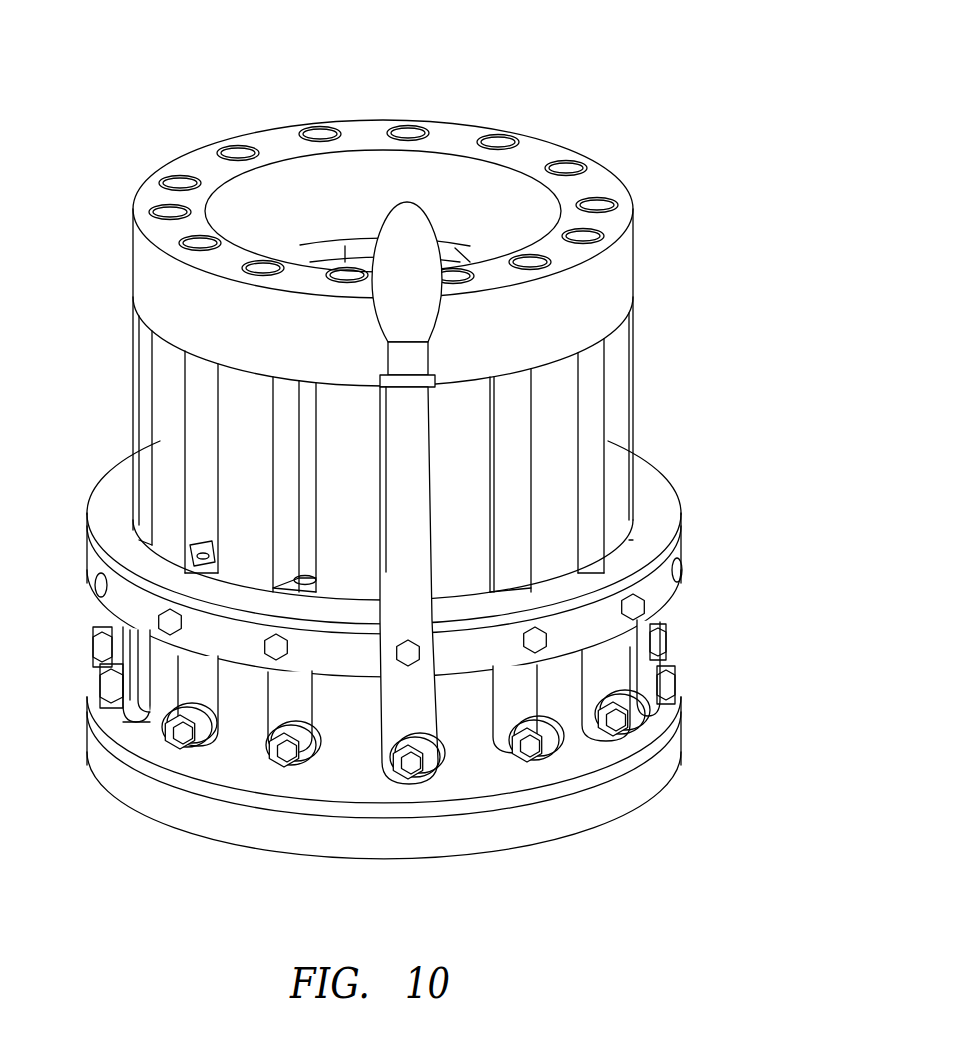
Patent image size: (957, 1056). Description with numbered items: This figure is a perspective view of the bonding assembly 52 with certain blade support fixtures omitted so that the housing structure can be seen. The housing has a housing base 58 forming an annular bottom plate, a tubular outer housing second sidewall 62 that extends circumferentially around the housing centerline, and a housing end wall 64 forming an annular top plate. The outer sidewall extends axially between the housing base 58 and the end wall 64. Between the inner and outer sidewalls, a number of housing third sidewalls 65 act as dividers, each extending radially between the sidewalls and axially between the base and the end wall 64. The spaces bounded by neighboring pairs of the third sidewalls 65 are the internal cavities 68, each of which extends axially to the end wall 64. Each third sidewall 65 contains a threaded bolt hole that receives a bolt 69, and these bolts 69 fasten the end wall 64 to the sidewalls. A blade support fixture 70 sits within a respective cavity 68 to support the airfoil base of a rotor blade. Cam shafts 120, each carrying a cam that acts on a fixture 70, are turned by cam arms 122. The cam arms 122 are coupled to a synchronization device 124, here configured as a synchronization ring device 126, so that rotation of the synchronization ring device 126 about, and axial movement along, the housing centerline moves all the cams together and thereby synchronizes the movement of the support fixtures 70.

The running tool assembly 52 is at (383, 266).
The housing base 58 is at (660, 768).
The housing second sidewall 62 is at (160, 730).
The housing end wall 64 is at (600, 180).
The housing third sidewall 65 is at (240, 462).
The internal cavity 68 is at (518, 458).
The bolt 69 is at (408, 134).
The blade support fixture 70 is at (182, 548).
The cam shaft 120 is at (178, 740).
The cam arm 122 is at (676, 686).
The synchronization device 124 is at (692, 510).
The synchronization ring device 126 is at (676, 606).